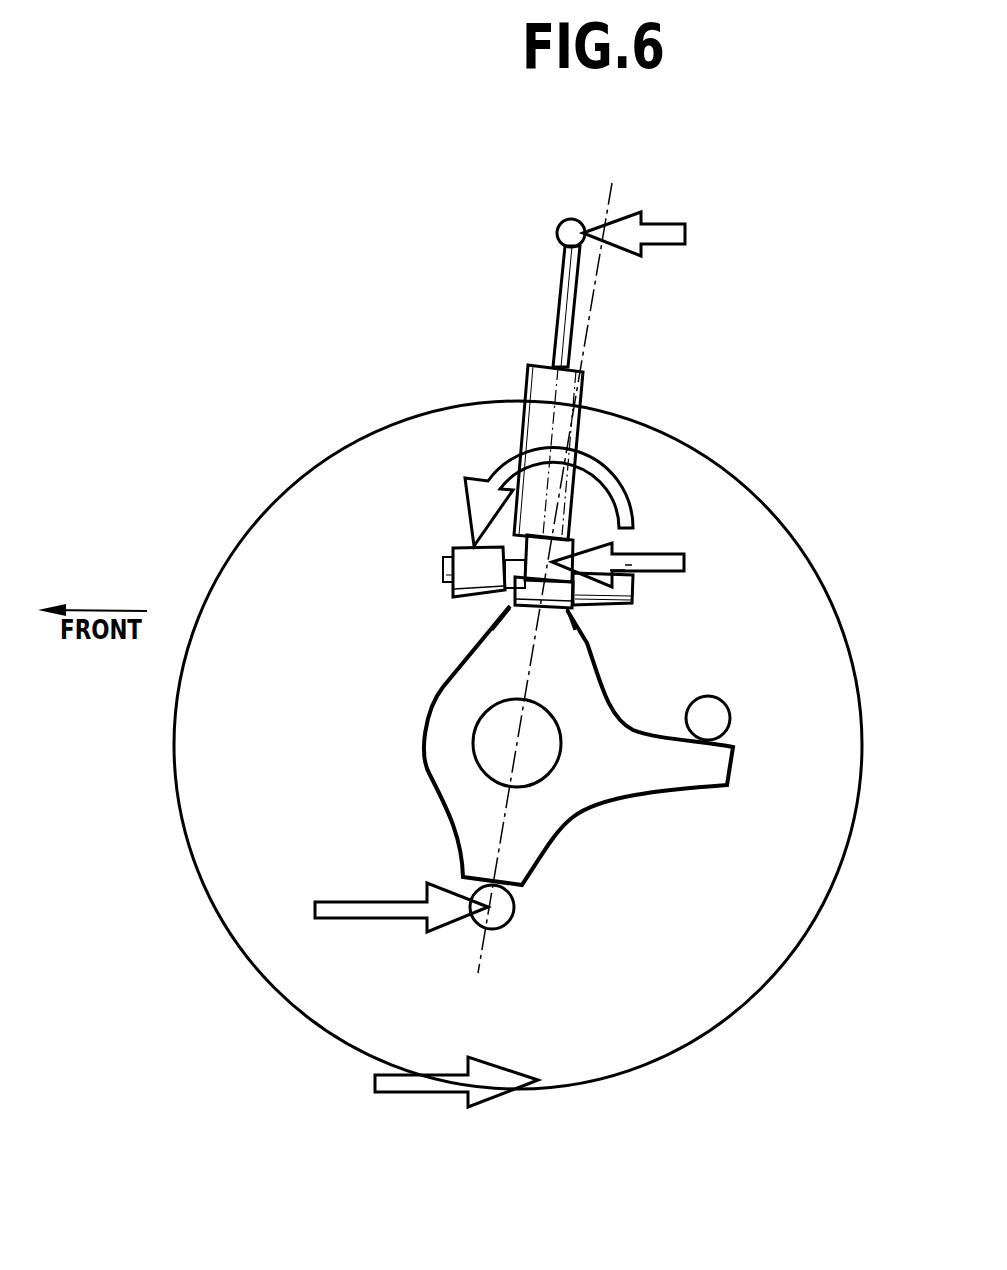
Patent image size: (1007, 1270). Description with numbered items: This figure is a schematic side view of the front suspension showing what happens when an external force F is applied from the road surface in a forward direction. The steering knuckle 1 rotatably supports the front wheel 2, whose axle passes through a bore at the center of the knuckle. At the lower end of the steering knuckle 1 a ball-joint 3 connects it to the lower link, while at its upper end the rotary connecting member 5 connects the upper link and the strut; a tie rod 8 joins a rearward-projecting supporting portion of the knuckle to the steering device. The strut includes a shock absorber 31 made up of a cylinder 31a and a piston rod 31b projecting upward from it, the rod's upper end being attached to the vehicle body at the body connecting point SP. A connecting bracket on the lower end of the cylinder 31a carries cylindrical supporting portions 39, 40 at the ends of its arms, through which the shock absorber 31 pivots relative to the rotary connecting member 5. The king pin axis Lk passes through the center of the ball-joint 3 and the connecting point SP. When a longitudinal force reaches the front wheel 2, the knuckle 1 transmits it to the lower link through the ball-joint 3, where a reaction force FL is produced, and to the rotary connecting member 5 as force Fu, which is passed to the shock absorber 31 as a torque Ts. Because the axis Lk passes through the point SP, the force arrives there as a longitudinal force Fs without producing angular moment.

The steering knuckle 1 is at (418, 697).
The front wheel 2 is at (857, 768).
The ball-joint 3 is at (498, 912).
The rotary connecting member 5 is at (594, 520).
The tie rod 8 is at (715, 717).
The shock absorber 31 is at (474, 393).
The cylinder 31a is at (535, 382).
The piston rod 31b is at (558, 290).
The cylindrical supporting portion 39 is at (456, 547).
The cylindrical supporting portion 40 is at (586, 596).
The body connecting point SP is at (560, 226).
The king pin axis Lk is at (597, 358).
The longitudinal force Fs is at (668, 245).
The torque Ts is at (542, 495).
The longitudinal force Fu is at (655, 575).
The reaction force FL is at (331, 910).
The force F is at (417, 1087).